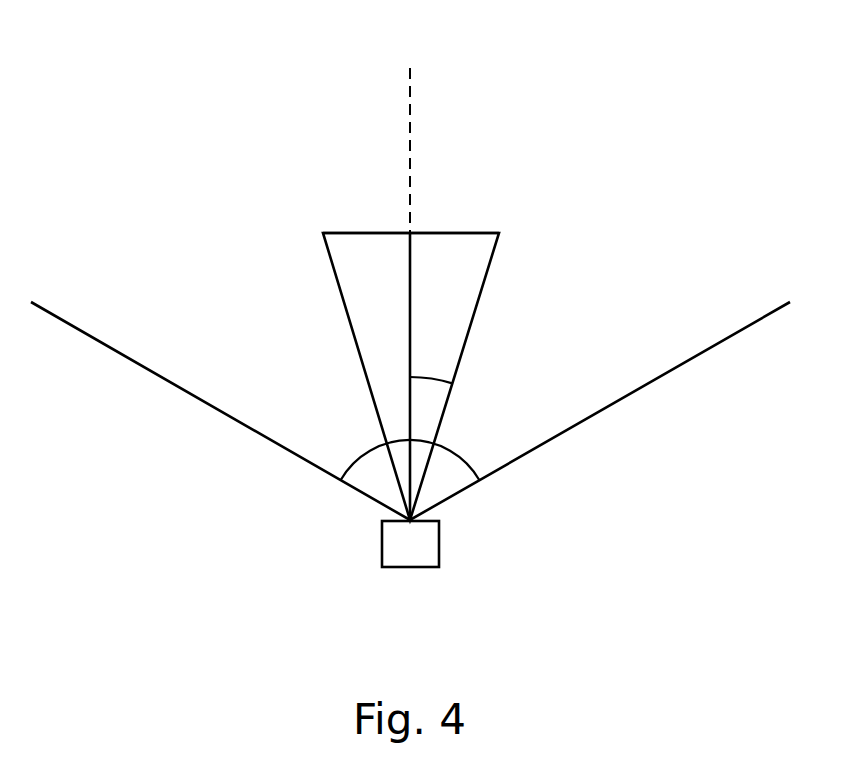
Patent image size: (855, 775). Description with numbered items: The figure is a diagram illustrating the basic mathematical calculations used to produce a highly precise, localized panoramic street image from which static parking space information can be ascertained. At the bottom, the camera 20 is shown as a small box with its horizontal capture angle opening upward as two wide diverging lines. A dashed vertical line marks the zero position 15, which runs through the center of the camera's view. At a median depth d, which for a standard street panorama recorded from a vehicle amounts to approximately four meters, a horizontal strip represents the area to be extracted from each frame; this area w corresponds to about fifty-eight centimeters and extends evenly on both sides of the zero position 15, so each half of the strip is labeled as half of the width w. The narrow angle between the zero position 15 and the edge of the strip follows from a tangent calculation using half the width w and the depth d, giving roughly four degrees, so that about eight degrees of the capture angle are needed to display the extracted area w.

The zero position 15 is at (411, 111).
The camera 20 is at (408, 567).
The median depth d is at (419, 376).
The area to be extracted w is at (411, 218).